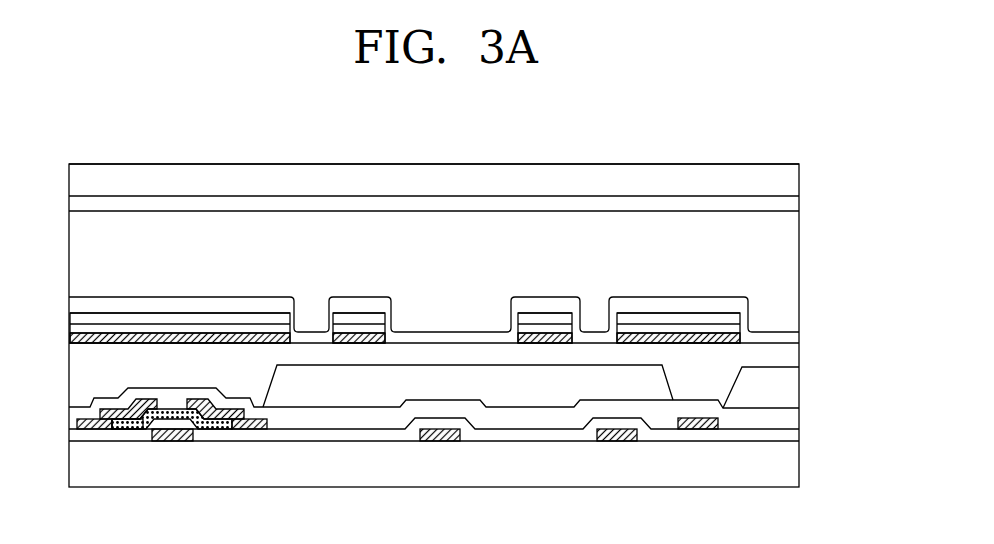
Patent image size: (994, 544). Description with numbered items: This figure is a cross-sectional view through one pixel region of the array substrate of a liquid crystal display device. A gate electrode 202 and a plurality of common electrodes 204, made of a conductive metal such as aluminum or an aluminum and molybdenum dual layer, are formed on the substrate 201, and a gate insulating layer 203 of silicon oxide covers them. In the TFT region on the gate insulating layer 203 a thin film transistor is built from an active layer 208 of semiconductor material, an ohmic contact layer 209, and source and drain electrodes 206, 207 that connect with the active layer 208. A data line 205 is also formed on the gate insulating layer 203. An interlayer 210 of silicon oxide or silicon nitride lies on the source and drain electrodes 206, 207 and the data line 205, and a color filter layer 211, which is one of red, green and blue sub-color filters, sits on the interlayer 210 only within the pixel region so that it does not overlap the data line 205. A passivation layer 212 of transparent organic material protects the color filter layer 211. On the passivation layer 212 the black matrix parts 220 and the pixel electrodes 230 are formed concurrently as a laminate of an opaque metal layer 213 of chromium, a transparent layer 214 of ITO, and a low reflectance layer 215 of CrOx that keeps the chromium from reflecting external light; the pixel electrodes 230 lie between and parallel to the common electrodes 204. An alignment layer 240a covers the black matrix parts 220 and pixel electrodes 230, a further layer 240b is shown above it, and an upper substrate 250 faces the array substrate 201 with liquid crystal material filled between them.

The substrate 201 is at (790, 466).
The gate electrode 202 is at (173, 442).
The gate insulating layer 203 is at (312, 436).
The common electrodes 204 is at (443, 443).
The data line 205 is at (702, 432).
The source electrode 206 is at (92, 432).
The drain electrode 207 is at (253, 430).
The active layer 208 is at (213, 432).
The ohmic contact layer 209 is at (131, 430).
The interlayer 210 is at (365, 420).
The color filter layer 211 is at (530, 390).
The passivation layer 212 is at (790, 358).
The opaque metal layer 213 is at (70, 338).
The transparent layer 214 is at (70, 328).
The low reflectance layer 215 is at (70, 317).
The black matrix parts 220 is at (184, 300).
The pixel electrodes 230 is at (365, 296).
The alignment layer 240a is at (790, 340).
The second encapsulation layer 240b is at (790, 203).
The upper substrate 250 is at (790, 182).